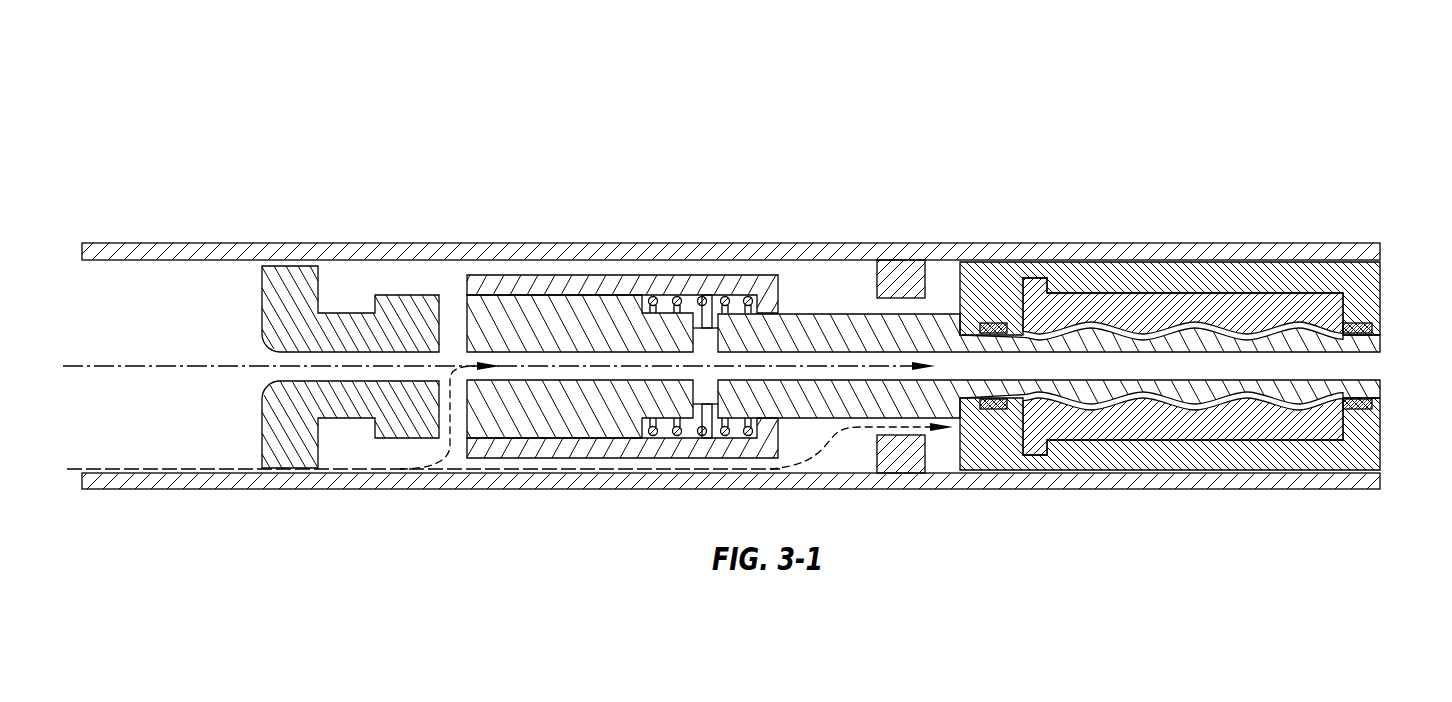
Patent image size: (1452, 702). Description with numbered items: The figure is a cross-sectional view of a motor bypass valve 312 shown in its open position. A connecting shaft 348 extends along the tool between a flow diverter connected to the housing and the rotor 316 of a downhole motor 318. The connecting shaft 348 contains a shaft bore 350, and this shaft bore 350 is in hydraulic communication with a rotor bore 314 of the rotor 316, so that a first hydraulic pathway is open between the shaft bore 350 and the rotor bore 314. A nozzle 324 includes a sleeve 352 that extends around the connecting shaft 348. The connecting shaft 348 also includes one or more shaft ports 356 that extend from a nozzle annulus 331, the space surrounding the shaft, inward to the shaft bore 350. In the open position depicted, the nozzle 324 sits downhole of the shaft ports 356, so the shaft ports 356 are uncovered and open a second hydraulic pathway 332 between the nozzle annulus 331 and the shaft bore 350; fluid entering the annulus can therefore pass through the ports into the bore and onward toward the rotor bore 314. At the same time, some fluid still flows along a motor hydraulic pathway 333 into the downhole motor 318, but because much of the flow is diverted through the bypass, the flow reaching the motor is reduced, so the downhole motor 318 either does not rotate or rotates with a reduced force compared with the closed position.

The motor bypass valve 312 is at (1377, 84).
The rotor bore 314 is at (897, 358).
The rotor 316 is at (1000, 342).
The downhole motor 318 is at (1191, 234).
The nozzle 324 is at (752, 260).
The nozzle annulus 331 is at (381, 452).
The hydraulic pathway 332 is at (444, 455).
The motor hydraulic pathway 333 is at (833, 437).
The connecting shaft 348 is at (568, 330).
The shaft bore 350 is at (598, 372).
The sleeve 352 is at (665, 302).
The shaft ports 356 is at (455, 295).